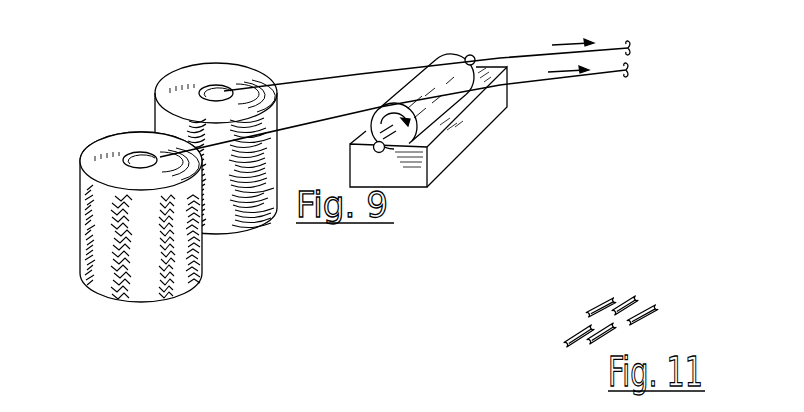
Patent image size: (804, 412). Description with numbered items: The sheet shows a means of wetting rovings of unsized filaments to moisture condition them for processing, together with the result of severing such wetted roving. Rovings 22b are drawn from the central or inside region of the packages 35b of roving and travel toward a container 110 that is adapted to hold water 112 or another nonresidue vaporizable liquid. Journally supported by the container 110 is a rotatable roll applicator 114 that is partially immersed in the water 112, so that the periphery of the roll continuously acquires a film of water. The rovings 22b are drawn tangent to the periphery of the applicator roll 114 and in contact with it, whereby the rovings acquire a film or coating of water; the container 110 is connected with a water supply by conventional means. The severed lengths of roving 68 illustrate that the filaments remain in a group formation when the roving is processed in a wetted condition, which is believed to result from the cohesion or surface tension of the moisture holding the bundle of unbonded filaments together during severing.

In FIG. 9, the package of roving 35b is at (160, 84).
In FIG. 9, the roving 22b is at (303, 80).
In FIG. 9, the container 110 is at (450, 153).
In FIG. 9, the water 112 is at (467, 110).
In FIG. 9, the roll applicator 114 is at (440, 57).
In FIG. 11, the severed lengths of roving 68 is at (597, 330).